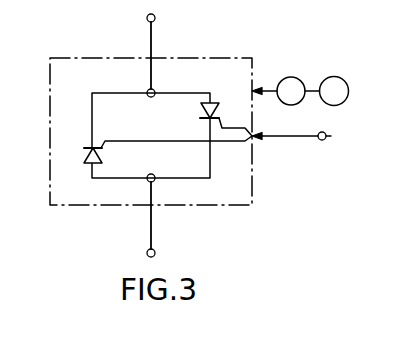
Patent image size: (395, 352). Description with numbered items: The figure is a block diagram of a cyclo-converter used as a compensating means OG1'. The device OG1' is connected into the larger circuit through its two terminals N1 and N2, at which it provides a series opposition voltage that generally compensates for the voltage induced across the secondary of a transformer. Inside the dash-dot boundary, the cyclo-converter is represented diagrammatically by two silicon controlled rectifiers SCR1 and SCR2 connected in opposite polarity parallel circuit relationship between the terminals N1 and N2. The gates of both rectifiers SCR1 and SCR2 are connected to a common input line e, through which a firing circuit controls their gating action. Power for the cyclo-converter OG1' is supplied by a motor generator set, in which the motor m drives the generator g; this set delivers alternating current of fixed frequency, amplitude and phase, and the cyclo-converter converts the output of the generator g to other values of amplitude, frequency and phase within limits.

The compensating means OG1' is at (143, 114).
The terminal N1 is at (147, 18).
The terminal N2 is at (147, 253).
The silicon controlled rectifier SCR1 is at (200, 112).
The silicon controlled rectifier SCR2 is at (101, 152).
The input line e is at (301, 134).
The generator g is at (278, 91).
The motor m is at (327, 91).